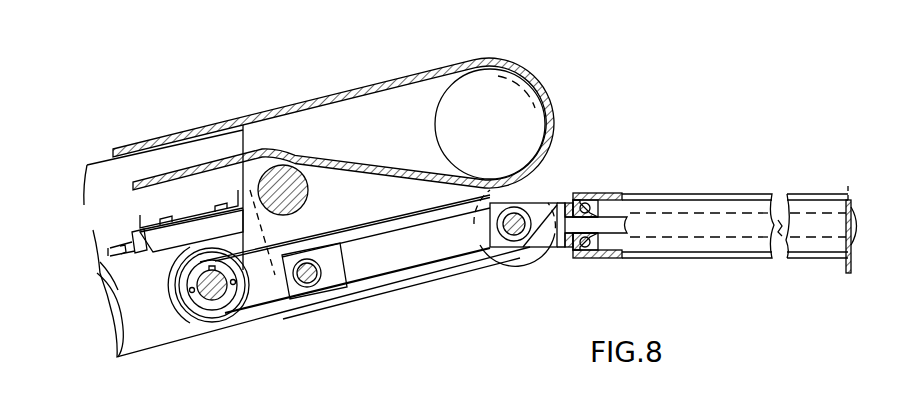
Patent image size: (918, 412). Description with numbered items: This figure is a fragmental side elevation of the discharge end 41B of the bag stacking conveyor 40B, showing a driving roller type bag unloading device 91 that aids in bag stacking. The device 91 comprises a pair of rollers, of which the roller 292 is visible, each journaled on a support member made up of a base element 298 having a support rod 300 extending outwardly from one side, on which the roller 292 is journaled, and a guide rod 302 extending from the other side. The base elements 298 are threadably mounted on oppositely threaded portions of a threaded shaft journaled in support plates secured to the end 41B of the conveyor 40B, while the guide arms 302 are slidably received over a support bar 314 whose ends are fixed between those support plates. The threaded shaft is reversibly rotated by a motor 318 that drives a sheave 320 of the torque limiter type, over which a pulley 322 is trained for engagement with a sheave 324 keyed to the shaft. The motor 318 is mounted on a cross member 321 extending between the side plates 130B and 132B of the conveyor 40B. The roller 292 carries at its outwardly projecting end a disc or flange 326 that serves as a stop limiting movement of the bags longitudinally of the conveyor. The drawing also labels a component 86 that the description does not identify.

The conveyor 40B is at (146, 135).
The discharge end 41B is at (398, 105).
The tubular housing 86 is at (330, 92).
The bag unloading device 91 is at (697, 163).
The side plate 130B is at (118, 320).
The side plate 132B is at (105, 178).
The roller 292 is at (748, 208).
The base element 298 is at (562, 200).
The support rod 300 is at (603, 222).
The guide rod 302 is at (415, 240).
The support bar 314 is at (305, 283).
The motor 318 is at (163, 258).
The sheave 320 is at (215, 305).
The cross member 321 is at (191, 221).
The pulley 322 is at (368, 290).
The sheave 324 is at (513, 255).
The disc or flange 326 is at (845, 270).